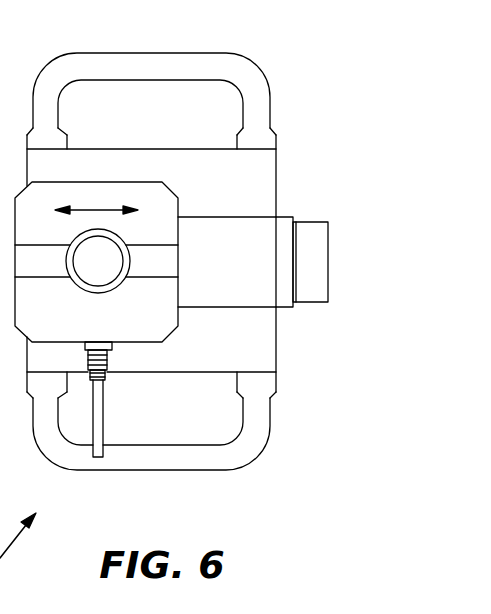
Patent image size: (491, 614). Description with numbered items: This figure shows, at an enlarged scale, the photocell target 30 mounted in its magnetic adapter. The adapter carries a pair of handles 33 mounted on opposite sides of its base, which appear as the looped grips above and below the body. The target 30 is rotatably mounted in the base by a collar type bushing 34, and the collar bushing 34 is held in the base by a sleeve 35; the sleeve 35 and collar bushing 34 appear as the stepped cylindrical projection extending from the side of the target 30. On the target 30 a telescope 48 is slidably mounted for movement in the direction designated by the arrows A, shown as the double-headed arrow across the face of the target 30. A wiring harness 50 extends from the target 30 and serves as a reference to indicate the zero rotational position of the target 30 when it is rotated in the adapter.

The photocell target 30 is at (171, 192).
The handles 33 is at (138, 53).
The collar type bushings 34 is at (312, 300).
The sleeves 35 is at (286, 215).
The telescope 48 is at (101, 291).
The wiring harness 50 is at (102, 425).
The arrows A is at (98, 208).